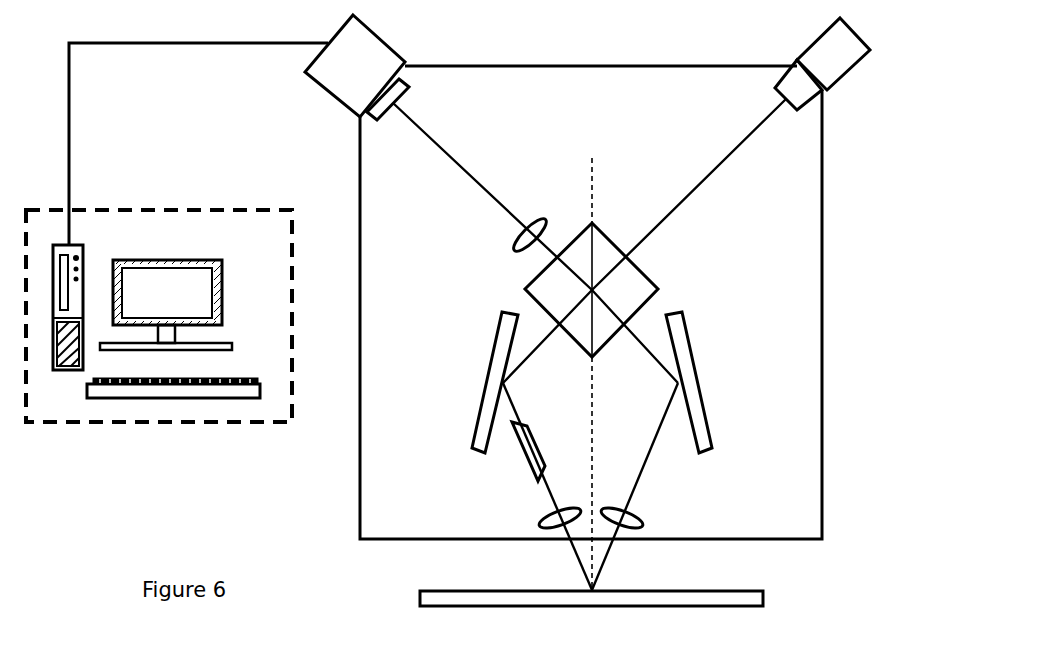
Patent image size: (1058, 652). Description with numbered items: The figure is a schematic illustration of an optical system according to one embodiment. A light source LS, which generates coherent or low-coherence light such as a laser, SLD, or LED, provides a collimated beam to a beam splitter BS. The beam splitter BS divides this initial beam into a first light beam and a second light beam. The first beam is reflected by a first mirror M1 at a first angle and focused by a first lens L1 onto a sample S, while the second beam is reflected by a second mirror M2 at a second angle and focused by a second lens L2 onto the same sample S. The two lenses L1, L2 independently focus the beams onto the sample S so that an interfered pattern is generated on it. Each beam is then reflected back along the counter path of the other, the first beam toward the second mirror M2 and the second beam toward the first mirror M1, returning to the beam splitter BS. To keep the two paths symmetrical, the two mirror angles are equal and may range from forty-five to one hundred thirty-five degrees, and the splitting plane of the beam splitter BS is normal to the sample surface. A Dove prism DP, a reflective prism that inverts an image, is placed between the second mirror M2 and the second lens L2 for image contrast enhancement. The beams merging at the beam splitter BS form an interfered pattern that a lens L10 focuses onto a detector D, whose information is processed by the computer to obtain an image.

The detector D is at (357, 70).
The light source LS is at (823, 64).
The lens L10 is at (532, 225).
The beam splitter BS is at (591, 283).
The first mirror M1 is at (693, 382).
The second mirror M2 is at (484, 382).
The Dove prism DP is at (541, 451).
The first lens L1 is at (635, 521).
The second lens L2 is at (546, 521).
The sample S is at (591, 587).
The element computer is at (159, 316).